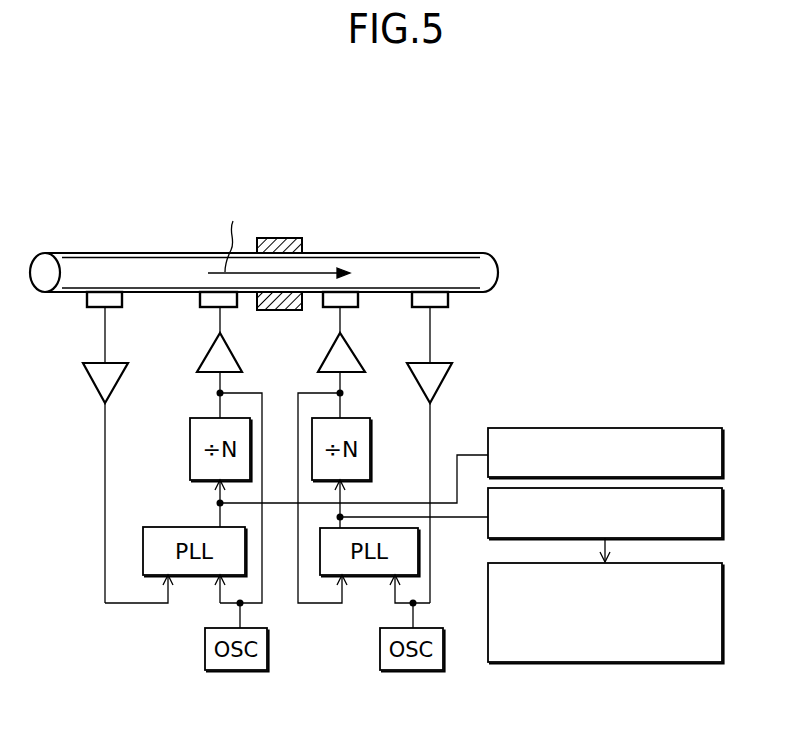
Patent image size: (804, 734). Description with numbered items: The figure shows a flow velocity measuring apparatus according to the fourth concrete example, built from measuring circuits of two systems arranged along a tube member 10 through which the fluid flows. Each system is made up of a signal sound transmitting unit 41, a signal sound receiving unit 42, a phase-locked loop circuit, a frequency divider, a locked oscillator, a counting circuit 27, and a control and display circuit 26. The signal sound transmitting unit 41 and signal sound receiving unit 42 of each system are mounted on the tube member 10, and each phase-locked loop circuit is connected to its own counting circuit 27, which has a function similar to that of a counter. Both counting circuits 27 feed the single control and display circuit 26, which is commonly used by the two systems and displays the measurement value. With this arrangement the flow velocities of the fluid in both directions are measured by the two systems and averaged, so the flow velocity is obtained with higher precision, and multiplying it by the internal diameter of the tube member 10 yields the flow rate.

The tube member 10 is at (423, 250).
The signal sound transmitting unit 41 is at (205, 306).
The signal sound receiving unit 42 is at (95, 307).
The counting circuit 27 is at (724, 455).
The control and display circuit 26 is at (578, 664).